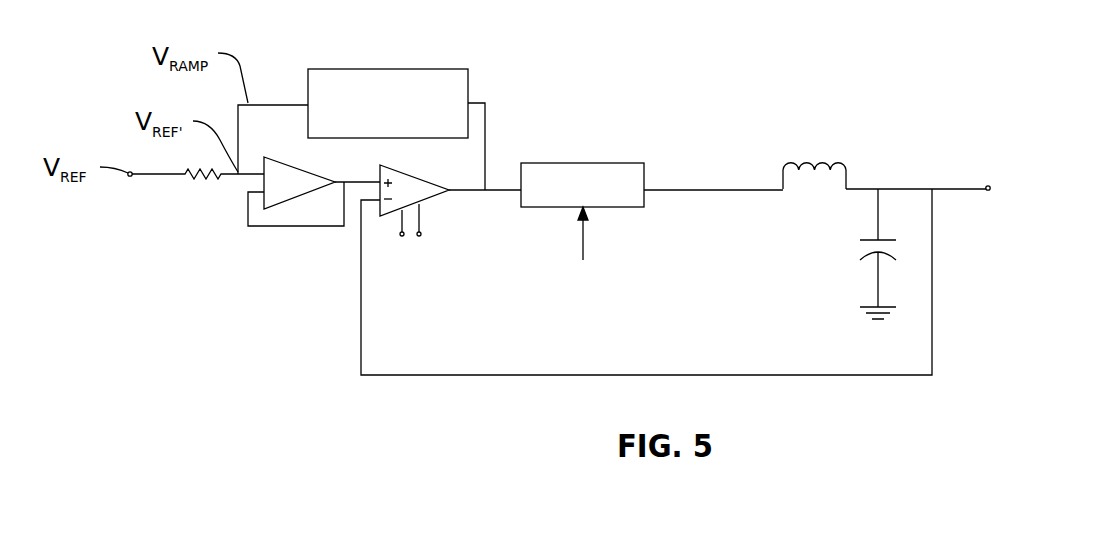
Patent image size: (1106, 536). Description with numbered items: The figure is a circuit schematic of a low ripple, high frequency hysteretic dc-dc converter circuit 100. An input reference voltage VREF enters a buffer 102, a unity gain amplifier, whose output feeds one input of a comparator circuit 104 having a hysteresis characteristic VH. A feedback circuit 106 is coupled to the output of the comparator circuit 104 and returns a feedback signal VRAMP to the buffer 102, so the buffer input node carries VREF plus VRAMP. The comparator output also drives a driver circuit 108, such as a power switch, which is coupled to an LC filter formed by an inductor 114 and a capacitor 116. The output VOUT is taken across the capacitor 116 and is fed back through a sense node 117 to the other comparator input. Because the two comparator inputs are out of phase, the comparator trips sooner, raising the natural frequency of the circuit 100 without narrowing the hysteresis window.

The hysteretic dc-dc converter circuit 100 is at (834, 98).
The buffer 102 is at (264, 181).
The comparator circuit 104 is at (432, 199).
The feedback circuit 106 is at (443, 69).
The driver circuit 108 is at (600, 163).
The inductor 114 is at (843, 167).
The capacitor 116 is at (872, 240).
The sense node 117 is at (360, 335).